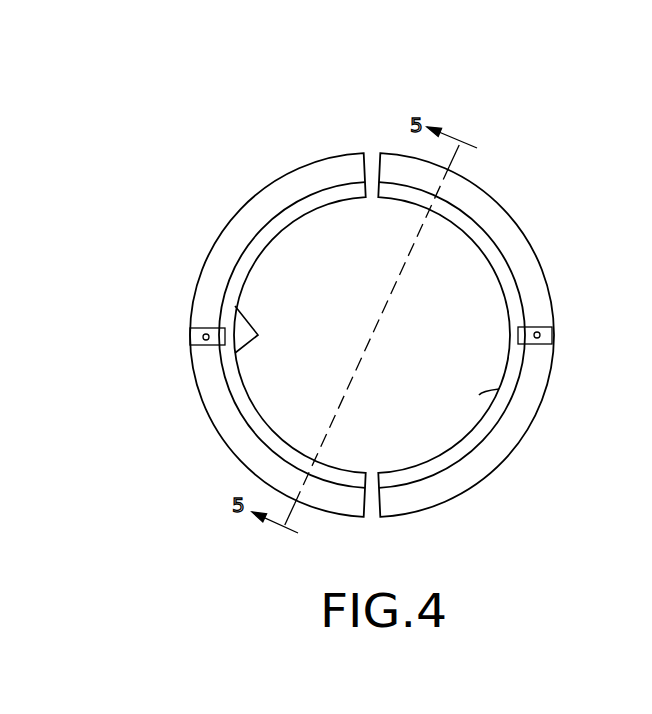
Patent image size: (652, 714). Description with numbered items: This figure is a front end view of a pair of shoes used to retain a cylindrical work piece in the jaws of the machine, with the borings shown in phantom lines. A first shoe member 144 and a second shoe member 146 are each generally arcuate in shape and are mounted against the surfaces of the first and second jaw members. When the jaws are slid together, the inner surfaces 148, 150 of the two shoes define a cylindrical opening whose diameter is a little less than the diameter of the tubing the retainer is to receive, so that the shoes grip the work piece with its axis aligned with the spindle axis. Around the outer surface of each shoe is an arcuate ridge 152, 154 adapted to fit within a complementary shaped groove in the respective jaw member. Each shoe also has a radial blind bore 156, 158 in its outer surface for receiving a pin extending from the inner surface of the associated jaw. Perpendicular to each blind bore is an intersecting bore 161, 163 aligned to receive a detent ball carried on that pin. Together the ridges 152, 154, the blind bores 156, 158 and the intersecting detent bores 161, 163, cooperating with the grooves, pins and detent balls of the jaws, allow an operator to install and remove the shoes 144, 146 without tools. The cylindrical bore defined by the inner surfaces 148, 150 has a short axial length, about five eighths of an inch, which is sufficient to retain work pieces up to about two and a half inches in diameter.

The first shoe member 144 is at (213, 428).
The second shoe member 146 is at (547, 388).
The inner surface of first shoe 148 is at (258, 335).
The inner surface of second shoe 150 is at (479, 395).
The arcuate ridge of first shoe 152 is at (197, 393).
The arcuate ridge of second shoe 154 is at (503, 207).
The radial blind bore of first shoe 156 is at (195, 347).
The radial blind bore of second shoe 158 is at (533, 327).
The intersecting detent bore of first shoe 161 is at (204, 335).
The intersecting detent bore of second shoe 163 is at (540, 337).